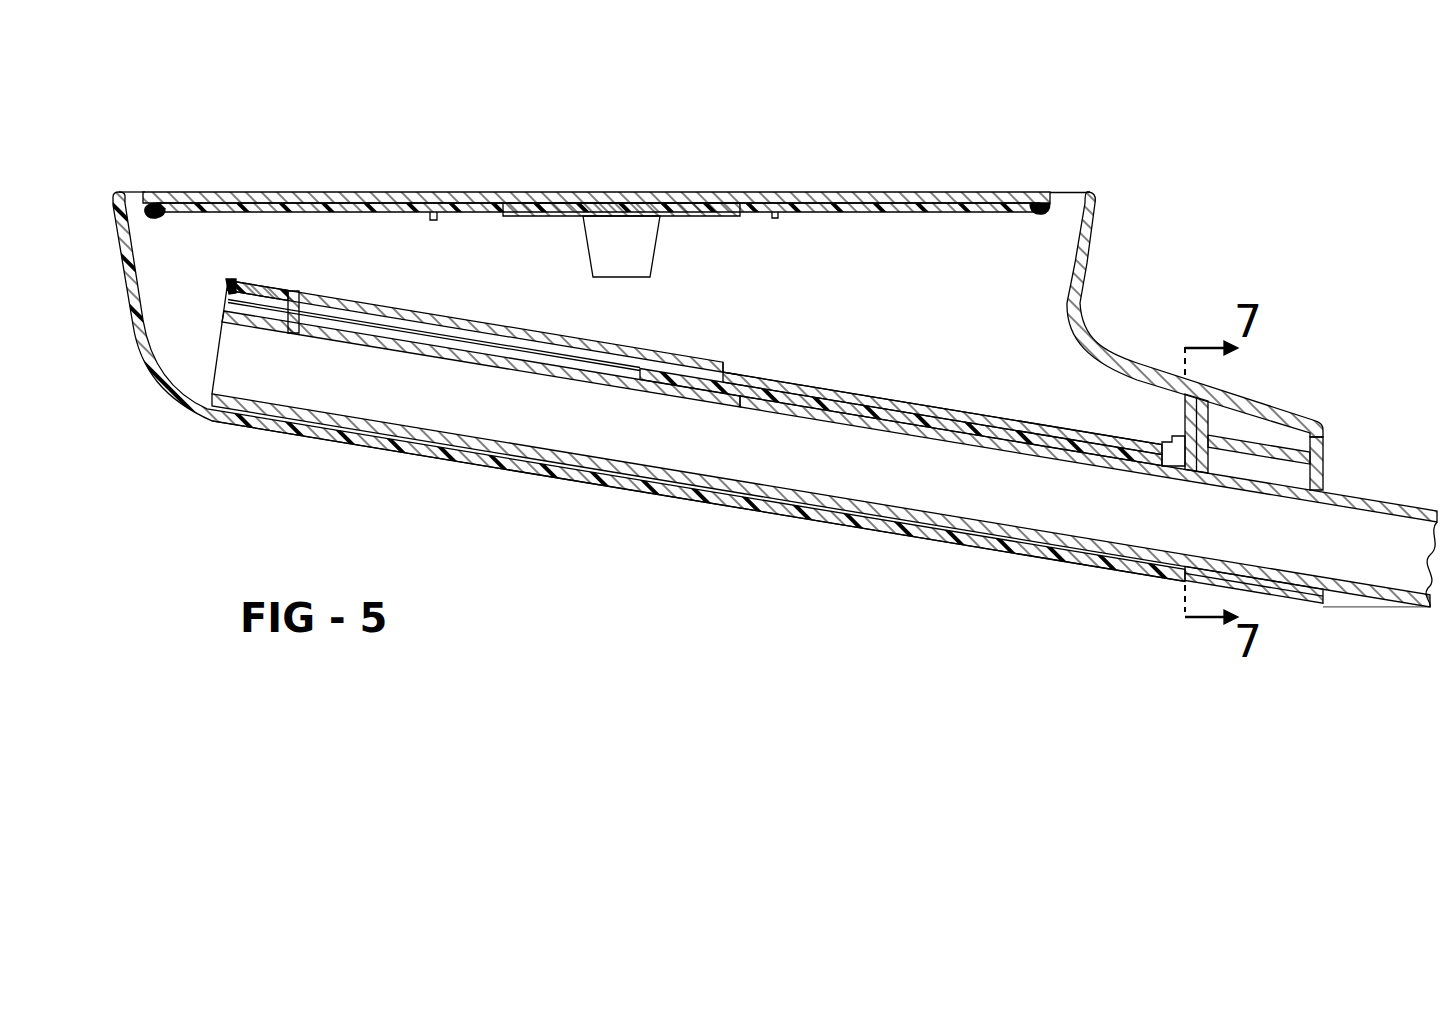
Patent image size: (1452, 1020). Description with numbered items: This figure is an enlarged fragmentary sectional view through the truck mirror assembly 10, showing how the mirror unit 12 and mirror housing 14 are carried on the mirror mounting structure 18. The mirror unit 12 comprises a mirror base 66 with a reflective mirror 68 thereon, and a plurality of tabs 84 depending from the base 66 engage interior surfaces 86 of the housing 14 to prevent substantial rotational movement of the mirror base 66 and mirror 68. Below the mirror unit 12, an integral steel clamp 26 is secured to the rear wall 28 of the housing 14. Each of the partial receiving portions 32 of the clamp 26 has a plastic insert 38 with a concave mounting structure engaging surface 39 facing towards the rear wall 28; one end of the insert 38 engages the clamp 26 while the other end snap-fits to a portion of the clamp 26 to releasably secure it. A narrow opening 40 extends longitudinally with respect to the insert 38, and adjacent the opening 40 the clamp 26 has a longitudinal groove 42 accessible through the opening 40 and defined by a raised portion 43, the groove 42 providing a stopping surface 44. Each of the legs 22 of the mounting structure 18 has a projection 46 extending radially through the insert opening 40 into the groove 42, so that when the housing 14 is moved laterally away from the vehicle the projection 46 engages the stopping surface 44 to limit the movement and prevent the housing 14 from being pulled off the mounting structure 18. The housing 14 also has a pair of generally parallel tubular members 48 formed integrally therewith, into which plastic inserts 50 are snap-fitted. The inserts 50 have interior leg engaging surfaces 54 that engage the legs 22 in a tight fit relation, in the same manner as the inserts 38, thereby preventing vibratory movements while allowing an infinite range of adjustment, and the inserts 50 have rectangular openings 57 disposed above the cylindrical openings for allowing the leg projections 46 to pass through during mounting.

The truck mirror assembly 10 is at (1200, 183).
The mirror unit 12 is at (596, 175).
The mirror housing 14 is at (497, 476).
The mirror mounting structure 18 is at (1370, 600).
The legs 22 is at (1013, 533).
The clamp 26 is at (741, 370).
The rear wall 28 is at (677, 504).
The partial receiving portions 32 is at (960, 410).
The plastic insert 38 is at (245, 301).
The mounting structure engaging surface 39 is at (1013, 442).
The opening 40 is at (606, 368).
The longitudinal groove 42 is at (441, 322).
The raised portion 43 is at (602, 350).
The stopping surface 44 is at (720, 378).
The projection 46 is at (300, 298).
The tubular members 48 is at (1289, 386).
The plastic inserts 50 is at (1294, 451).
The interior leg engaging surfaces 54 is at (1303, 574).
The rectangular openings 57 is at (1311, 480).
The mirror base 66 is at (388, 204).
The reflective mirror 68 is at (302, 193).
The tabs 84 is at (653, 242).
The interior surfaces 86 is at (543, 243).